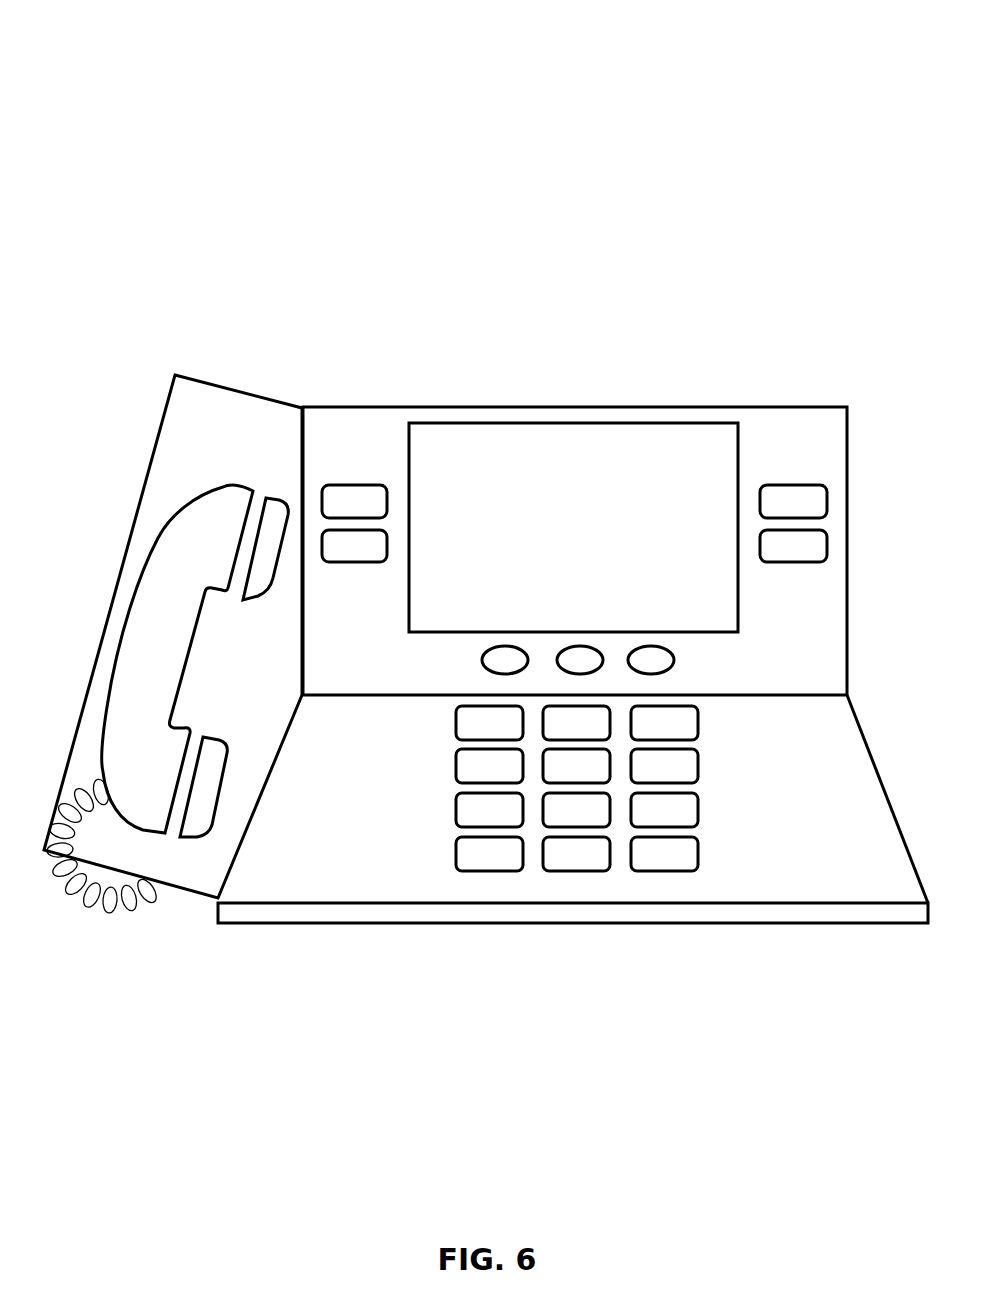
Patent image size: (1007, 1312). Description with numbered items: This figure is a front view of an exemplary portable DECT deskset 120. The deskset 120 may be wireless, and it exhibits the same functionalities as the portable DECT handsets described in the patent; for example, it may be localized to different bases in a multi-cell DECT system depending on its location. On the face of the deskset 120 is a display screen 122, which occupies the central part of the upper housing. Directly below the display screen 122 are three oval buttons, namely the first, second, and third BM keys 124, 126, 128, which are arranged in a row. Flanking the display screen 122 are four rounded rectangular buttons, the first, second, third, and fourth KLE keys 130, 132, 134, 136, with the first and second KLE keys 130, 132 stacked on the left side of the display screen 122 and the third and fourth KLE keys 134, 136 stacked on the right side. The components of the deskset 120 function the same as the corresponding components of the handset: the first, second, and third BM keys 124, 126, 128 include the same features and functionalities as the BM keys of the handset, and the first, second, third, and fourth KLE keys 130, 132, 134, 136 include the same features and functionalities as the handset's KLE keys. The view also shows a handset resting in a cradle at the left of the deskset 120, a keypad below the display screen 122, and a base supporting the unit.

The portable DECT deskset 120 is at (707, 95).
The display screen 122 is at (680, 423).
The first BM key 124 is at (482, 665).
The second BM key 126 is at (546, 672).
The third BM key 128 is at (675, 658).
The first KLE key 130 is at (387, 500).
The second KLE key 132 is at (387, 545).
The third KLE key 134 is at (827, 500).
The fourth KLE key 136 is at (827, 545).